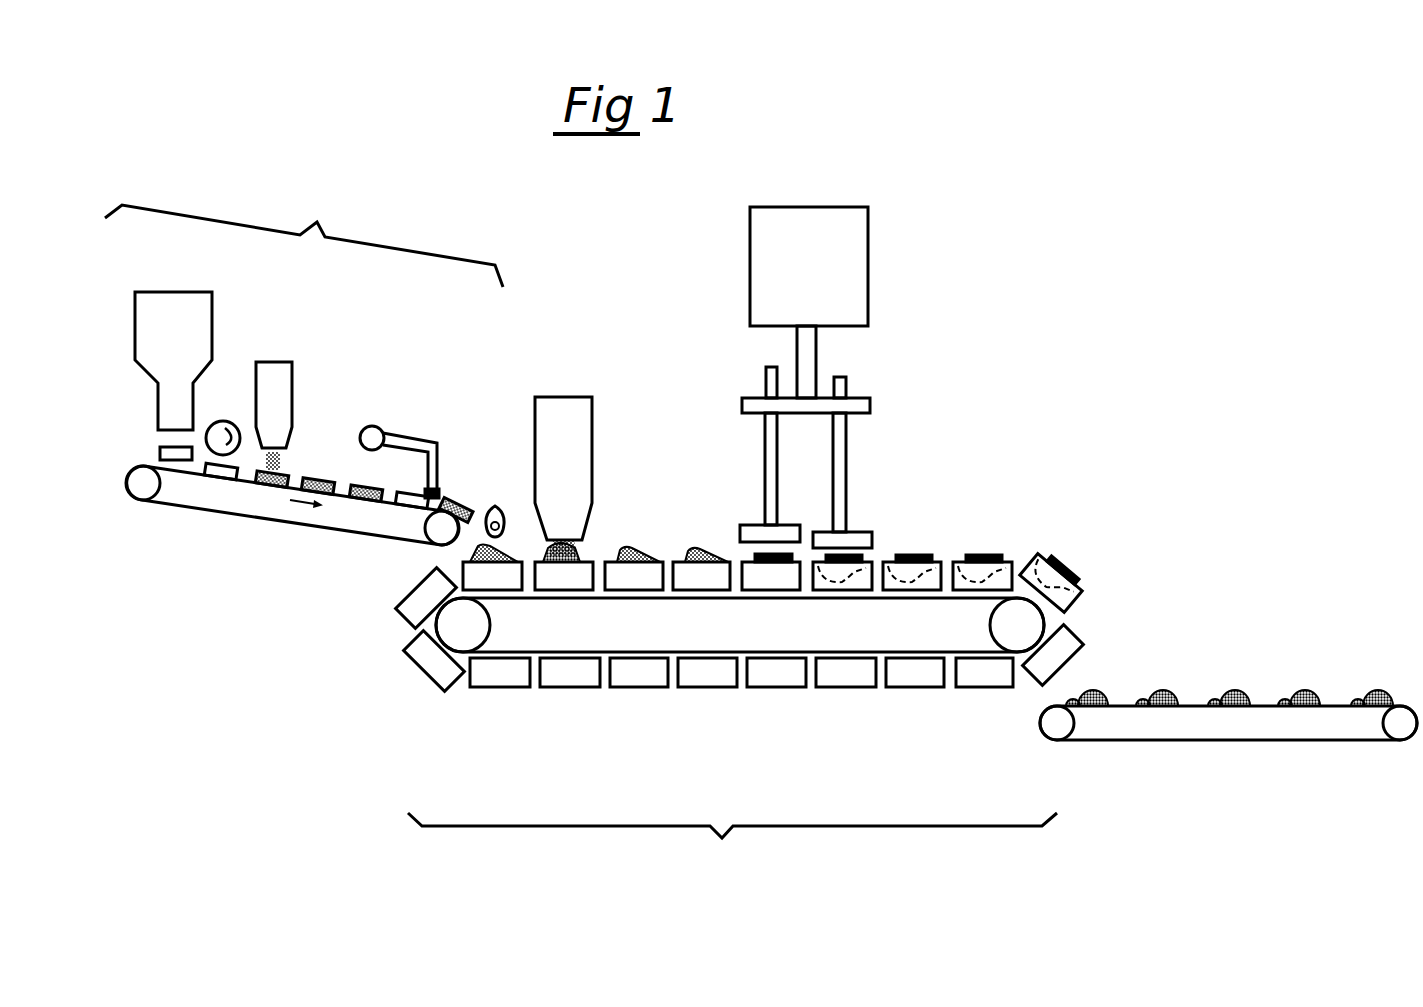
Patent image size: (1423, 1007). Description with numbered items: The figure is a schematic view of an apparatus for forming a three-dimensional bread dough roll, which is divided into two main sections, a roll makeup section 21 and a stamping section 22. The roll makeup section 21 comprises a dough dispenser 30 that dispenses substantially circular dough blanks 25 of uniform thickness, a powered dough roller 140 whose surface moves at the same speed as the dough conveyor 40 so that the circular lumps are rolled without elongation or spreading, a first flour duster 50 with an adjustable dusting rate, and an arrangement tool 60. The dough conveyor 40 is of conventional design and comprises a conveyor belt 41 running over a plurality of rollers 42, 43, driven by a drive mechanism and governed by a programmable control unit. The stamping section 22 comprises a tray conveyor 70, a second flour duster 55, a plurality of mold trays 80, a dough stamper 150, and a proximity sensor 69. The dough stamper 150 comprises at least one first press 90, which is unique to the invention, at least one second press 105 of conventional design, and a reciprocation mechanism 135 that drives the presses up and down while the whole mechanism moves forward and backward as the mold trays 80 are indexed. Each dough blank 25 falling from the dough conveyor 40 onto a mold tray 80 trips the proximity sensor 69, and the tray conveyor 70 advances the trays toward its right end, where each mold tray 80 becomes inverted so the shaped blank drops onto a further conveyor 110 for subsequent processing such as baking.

The roll makeup section 21 is at (304, 239).
The stamping section 22 is at (732, 843).
The dough blank 25 is at (159, 452).
The dough dispenser 30 is at (166, 292).
The dough conveyor 40 is at (282, 537).
The conveyor belt 41 is at (293, 527).
The roller 42 is at (429, 527).
The roller 43 is at (137, 488).
The first flour duster 50 is at (265, 362).
The second flour duster 55 is at (557, 397).
The arrangement tool 60 is at (426, 425).
The proximity sensor 69 is at (499, 504).
The tray conveyor 70 is at (741, 648).
The mold tray 80 is at (567, 689).
The first press 90 is at (765, 458).
The second press 105 is at (848, 488).
The conveyor 110 is at (1047, 756).
The reciprocation mechanism 135 is at (806, 207).
The dough roller 140 is at (222, 421).
The dough stamper 150 is at (848, 353).